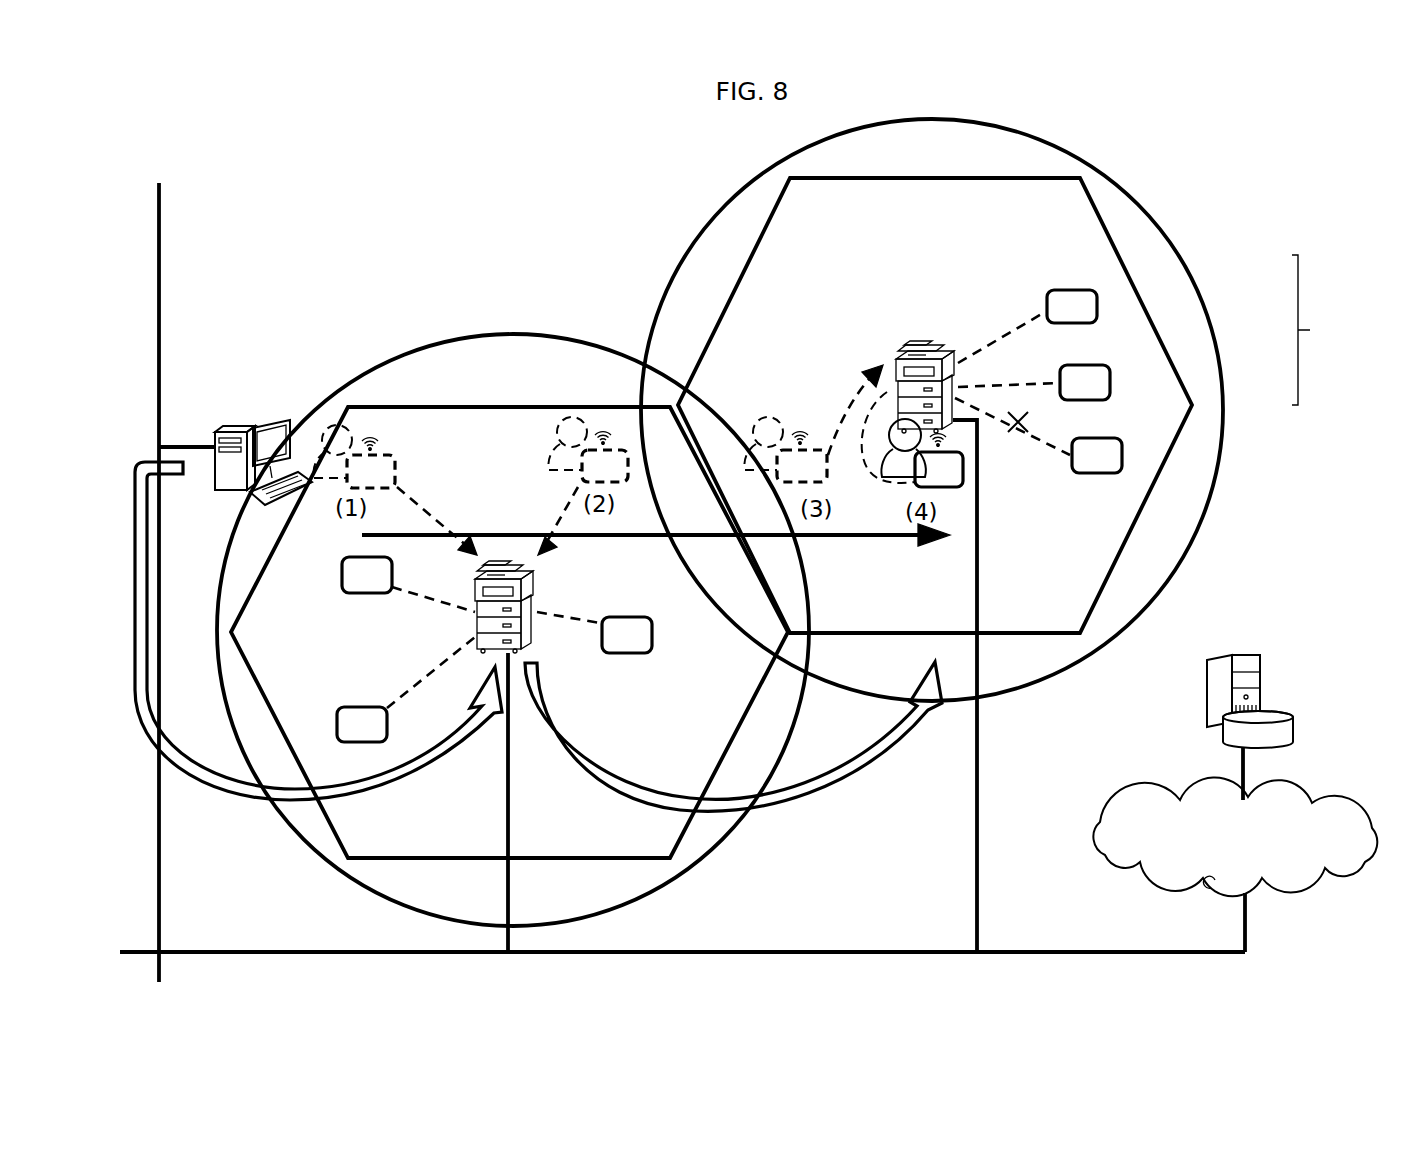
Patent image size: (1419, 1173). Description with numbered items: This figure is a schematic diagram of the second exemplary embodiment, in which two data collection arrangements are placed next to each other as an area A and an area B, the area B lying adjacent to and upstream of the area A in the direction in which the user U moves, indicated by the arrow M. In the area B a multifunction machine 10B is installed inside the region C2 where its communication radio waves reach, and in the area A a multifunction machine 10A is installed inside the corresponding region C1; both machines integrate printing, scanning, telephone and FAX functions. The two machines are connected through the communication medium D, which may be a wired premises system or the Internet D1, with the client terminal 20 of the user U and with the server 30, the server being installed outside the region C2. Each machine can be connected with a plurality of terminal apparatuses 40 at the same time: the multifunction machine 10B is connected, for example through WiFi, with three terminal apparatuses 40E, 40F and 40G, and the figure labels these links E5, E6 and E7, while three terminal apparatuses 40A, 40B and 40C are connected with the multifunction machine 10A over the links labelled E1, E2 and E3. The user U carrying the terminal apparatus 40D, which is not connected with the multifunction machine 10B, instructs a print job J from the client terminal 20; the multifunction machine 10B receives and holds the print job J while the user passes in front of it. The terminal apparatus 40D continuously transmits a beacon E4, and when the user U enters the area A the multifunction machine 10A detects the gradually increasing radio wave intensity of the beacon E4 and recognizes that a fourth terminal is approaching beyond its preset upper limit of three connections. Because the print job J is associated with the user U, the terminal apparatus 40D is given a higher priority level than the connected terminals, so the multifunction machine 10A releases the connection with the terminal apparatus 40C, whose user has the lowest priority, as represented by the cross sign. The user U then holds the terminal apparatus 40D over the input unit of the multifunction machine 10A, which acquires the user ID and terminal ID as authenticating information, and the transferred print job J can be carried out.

The client terminal 20 is at (240, 425).
The server 30 is at (1243, 657).
The multifunction machine 10A is at (930, 338).
The multifunction machine 10B is at (520, 556).
The terminal apparatus 40 is at (1319, 330).
The terminal apparatus 40A is at (1097, 305).
The terminal apparatus 40B is at (1110, 383).
The terminal apparatus 40C is at (1122, 455).
The terminal apparatus 40D is at (375, 455).
The terminal apparatus 40E is at (345, 585).
The terminal apparatus 40F is at (345, 706).
The terminal apparatus 40G is at (645, 657).
The area A is at (1115, 247).
The area B is at (545, 405).
The region where communication radio waves reach C1 is at (1115, 183).
The region where communication radio waves reach C2 is at (455, 340).
The communication medium D is at (160, 818).
The Internet D1 is at (1140, 800).
The connection to device A E1 is at (1022, 325).
The connection to device B E2 is at (990, 383).
The connection to device C (disconnected) E3 is at (1040, 437).
The beacon E4 is at (430, 513).
The connection to device E E5 is at (432, 603).
The connection to device F E6 is at (445, 660).
The connection to device G E7 is at (570, 625).
The print job J is at (392, 790).
The arrow M is at (760, 537).
The user U is at (322, 437).